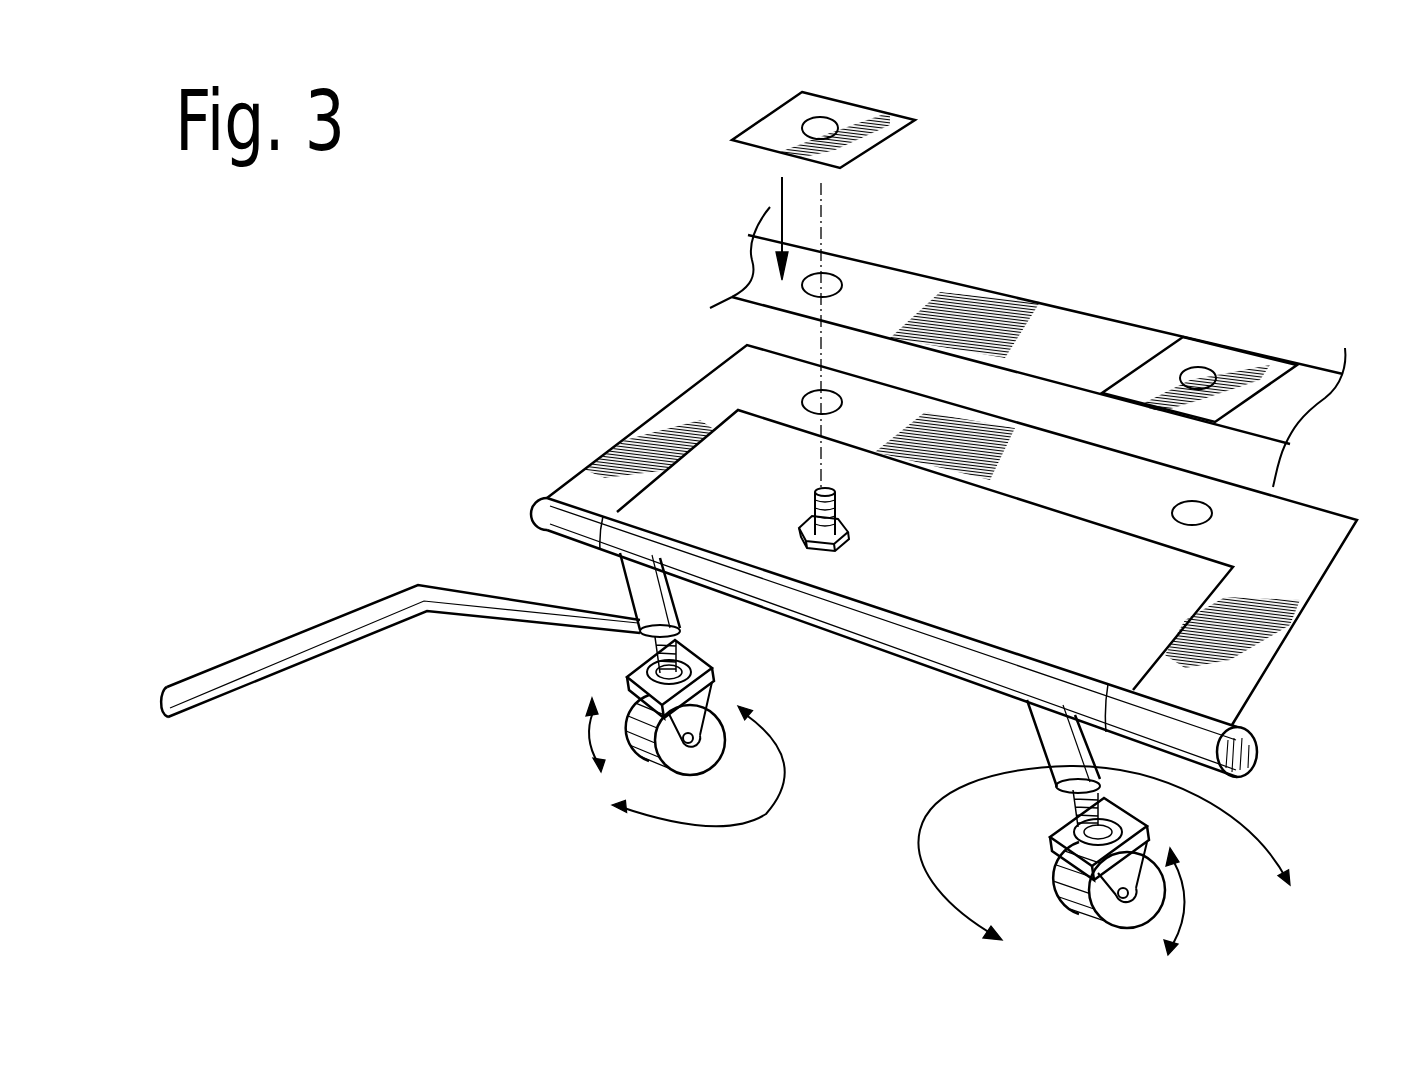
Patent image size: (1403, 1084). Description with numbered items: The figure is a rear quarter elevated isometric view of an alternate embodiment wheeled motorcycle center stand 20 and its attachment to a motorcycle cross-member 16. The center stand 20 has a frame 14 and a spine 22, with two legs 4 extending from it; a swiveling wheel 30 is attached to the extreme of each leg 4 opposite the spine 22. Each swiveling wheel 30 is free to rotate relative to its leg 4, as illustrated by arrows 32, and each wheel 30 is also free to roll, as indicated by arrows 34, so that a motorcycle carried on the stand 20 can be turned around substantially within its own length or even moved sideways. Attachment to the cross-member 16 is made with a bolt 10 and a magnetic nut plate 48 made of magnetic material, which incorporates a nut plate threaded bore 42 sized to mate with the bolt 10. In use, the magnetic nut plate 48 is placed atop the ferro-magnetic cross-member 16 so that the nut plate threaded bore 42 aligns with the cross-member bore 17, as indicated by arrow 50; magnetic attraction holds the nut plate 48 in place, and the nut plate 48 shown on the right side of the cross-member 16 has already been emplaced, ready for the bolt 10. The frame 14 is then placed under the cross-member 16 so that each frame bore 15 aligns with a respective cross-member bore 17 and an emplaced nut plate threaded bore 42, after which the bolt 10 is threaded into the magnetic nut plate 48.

The leg 4 is at (613, 577).
The bolt 10 is at (848, 522).
The frame 14 is at (952, 535).
The frame bore 15 is at (829, 398).
The cross-member 16 is at (977, 307).
The cross-member bore 17 is at (835, 273).
The wheeled motorcycle center stand 20 is at (476, 309).
The spine 22 is at (900, 630).
The swiveling wheel 30 is at (713, 712).
The arrows 32 is at (765, 813).
The arrows 34 is at (590, 735).
The nut plate threaded bore 42 is at (807, 115).
The magnetic nut plate 48 is at (1200, 353).
The arrow 50 is at (778, 198).